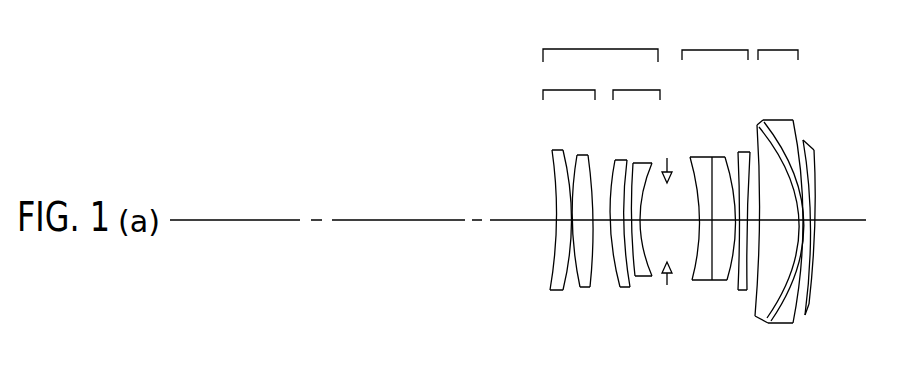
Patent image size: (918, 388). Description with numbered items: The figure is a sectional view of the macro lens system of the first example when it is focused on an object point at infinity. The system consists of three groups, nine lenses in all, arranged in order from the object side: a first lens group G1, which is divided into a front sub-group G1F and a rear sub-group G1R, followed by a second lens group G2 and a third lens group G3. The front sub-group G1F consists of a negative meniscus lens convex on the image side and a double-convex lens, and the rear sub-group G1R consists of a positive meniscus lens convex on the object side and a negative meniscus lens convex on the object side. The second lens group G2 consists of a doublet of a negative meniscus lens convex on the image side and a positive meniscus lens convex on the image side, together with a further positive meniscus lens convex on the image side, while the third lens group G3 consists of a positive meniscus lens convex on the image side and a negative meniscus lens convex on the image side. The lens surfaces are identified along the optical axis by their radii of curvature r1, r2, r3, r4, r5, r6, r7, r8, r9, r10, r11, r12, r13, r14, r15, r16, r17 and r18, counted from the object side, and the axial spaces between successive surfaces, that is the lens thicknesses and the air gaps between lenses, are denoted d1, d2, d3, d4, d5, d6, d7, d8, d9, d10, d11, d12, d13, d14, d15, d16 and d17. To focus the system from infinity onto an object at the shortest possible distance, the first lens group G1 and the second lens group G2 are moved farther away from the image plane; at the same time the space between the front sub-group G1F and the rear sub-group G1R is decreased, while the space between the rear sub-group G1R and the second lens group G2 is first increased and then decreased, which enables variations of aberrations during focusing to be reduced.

The first lens group G1 is at (600, 41).
The front sub-group of the first lens group G1F is at (569, 82).
The rear sub-group of the first lens group G1R is at (636, 82).
The second lens group G2 is at (715, 40).
The third lens group G3 is at (776, 40).
The radius of curvature r1 is at (552, 150).
The radius of curvature r2 is at (562, 150).
The radius of curvature r3 is at (578, 155).
The radius of curvature r4 is at (590, 155).
The radius of curvature r5 is at (616, 160).
The radius of curvature r6 is at (628, 160).
The radius of curvature r7 is at (637, 163).
The radius of curvature r8 is at (652, 163).
The radius of curvature r9 is at (692, 157).
The radius of curvature r10 is at (699, 157).
The radius of curvature r11 is at (712, 157).
The radius of curvature r12 is at (739, 152).
The radius of curvature r13 is at (749, 152).
The radius of curvature r14 is at (758, 125).
The radius of curvature r15 is at (766, 120).
The radius of curvature r16 is at (793, 120).
The radius of curvature r17 is at (803, 140).
The radius of curvature r18 is at (816, 170).
The space between lens surfaces d1 is at (553, 230).
The space between lens surfaces d2 is at (567, 290).
The space between lens surfaces d3 is at (583, 287).
The space between lens surfaces d4 is at (605, 282).
The space between lens surfaces d5 is at (622, 287).
The space between lens surfaces d6 is at (631, 282).
The space between lens surfaces d7 is at (646, 276).
The space between lens surfaces d8 is at (660, 237).
The space between lens surfaces d9 is at (702, 218).
The space between lens surfaces d10 is at (712, 281).
The space between lens surfaces d11 is at (733, 282).
The space between lens surfaces d12 is at (742, 290).
The space between lens surfaces d13 is at (754, 300).
The space between lens surfaces d14 is at (766, 322).
The space between lens surfaces d15 is at (781, 221).
The space between lens surfaces d16 is at (806, 238).
The space between lens surfaces d17 is at (815, 226).